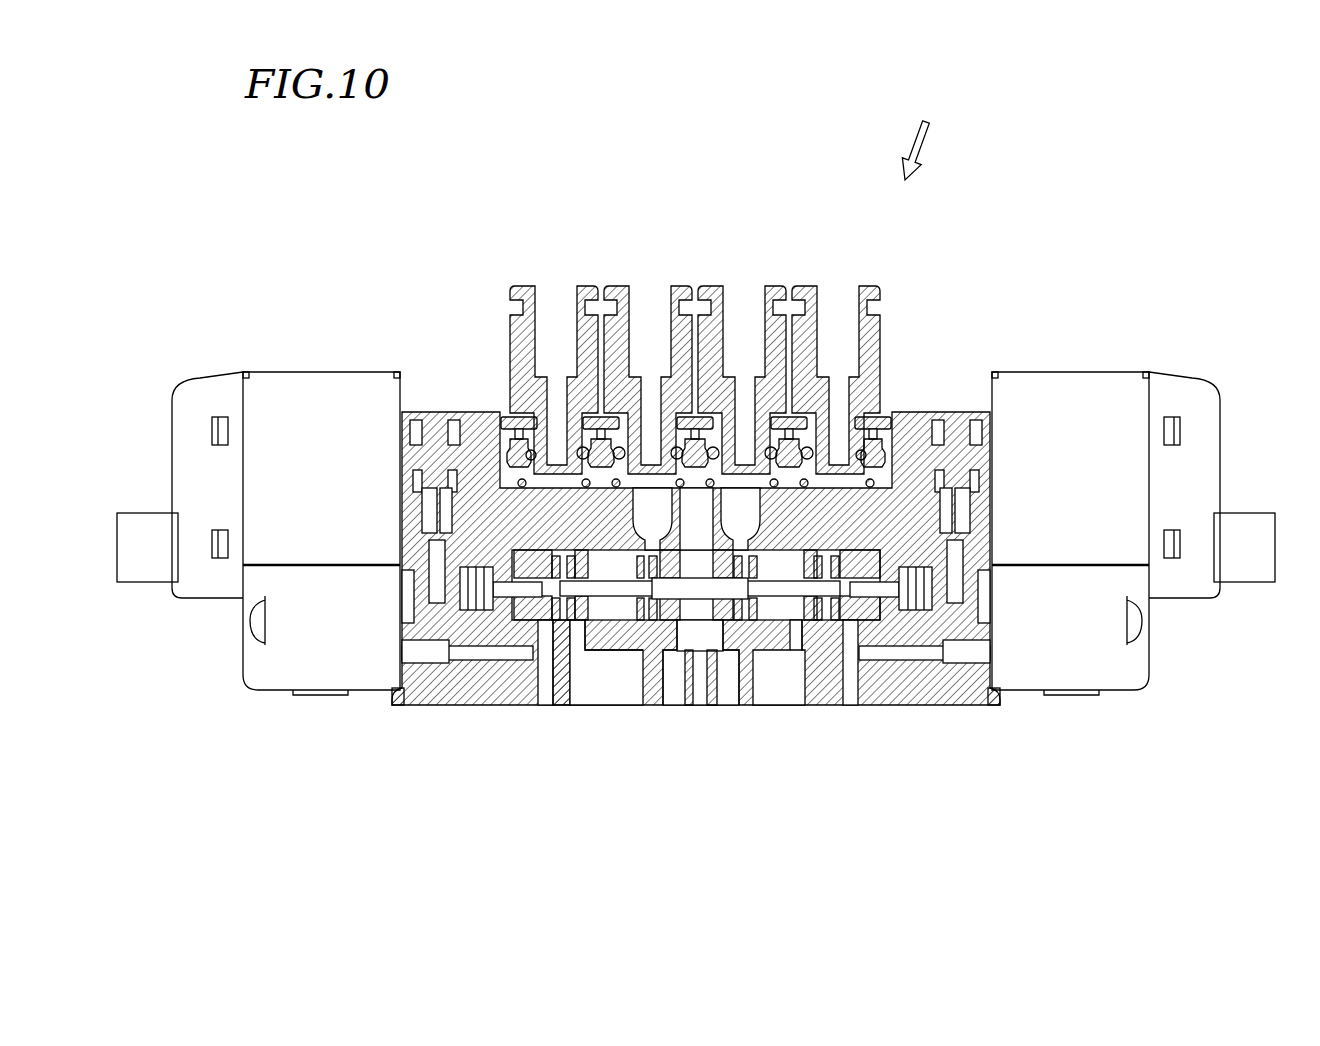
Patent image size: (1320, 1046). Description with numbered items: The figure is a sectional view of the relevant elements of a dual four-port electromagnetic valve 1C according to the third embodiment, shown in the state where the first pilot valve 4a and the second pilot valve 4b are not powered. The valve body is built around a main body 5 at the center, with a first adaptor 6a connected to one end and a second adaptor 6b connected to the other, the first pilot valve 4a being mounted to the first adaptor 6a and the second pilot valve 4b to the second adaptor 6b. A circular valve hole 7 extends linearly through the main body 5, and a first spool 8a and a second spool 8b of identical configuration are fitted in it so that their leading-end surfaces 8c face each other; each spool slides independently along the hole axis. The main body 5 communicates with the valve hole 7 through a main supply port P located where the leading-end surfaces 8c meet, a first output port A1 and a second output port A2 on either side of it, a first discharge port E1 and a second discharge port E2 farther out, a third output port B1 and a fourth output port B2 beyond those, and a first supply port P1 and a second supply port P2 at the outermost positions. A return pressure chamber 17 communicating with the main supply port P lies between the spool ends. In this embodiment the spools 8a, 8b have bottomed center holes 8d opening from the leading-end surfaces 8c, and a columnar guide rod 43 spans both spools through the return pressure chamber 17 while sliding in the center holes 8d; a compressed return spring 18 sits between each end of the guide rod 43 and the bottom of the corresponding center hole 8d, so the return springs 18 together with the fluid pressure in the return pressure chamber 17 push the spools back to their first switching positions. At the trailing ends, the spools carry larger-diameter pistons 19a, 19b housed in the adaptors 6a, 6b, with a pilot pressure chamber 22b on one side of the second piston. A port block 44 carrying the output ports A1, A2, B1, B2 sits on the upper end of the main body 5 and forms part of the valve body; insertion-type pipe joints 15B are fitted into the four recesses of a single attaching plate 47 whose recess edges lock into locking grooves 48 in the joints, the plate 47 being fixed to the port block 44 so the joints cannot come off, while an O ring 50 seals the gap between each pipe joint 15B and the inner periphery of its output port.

The electromagnetic valve 1C is at (922, 135).
The first pilot valve 4a is at (295, 398).
The second pilot valve 4b is at (1088, 398).
The main body 5 is at (873, 690).
The first adaptor 6a is at (440, 690).
The second adaptor 6b is at (975, 690).
The valve hole 7 is at (565, 700).
The first spool 8a is at (655, 610).
The second spool 8b is at (776, 680).
The leading-end surfaces 8c is at (670, 553).
The center holes 8d is at (618, 652).
The insertion-type pipe joints 15B is at (695, 338).
The return pressure chamber 17 is at (695, 610).
The return spring 18 is at (672, 605).
The piston 19a is at (470, 630).
The piston 19b is at (920, 630).
The pilot pressure chamber 22b is at (470, 598).
The guide rod 43 is at (697, 560).
The port block 44 is at (900, 462).
The attaching plate 47 is at (880, 430).
The locking grooves 48 is at (512, 420).
The O ring 50 is at (516, 458).
The first output port A1 is at (650, 478).
The second output port A2 is at (744, 478).
The third output port B1 is at (556, 478).
The fourth output port B2 is at (838, 478).
The main supply port P is at (712, 660).
The first supply port P1 is at (545, 690).
The second supply port P2 is at (852, 690).
The first discharge port E1 is at (598, 690).
The second discharge port E2 is at (796, 690).